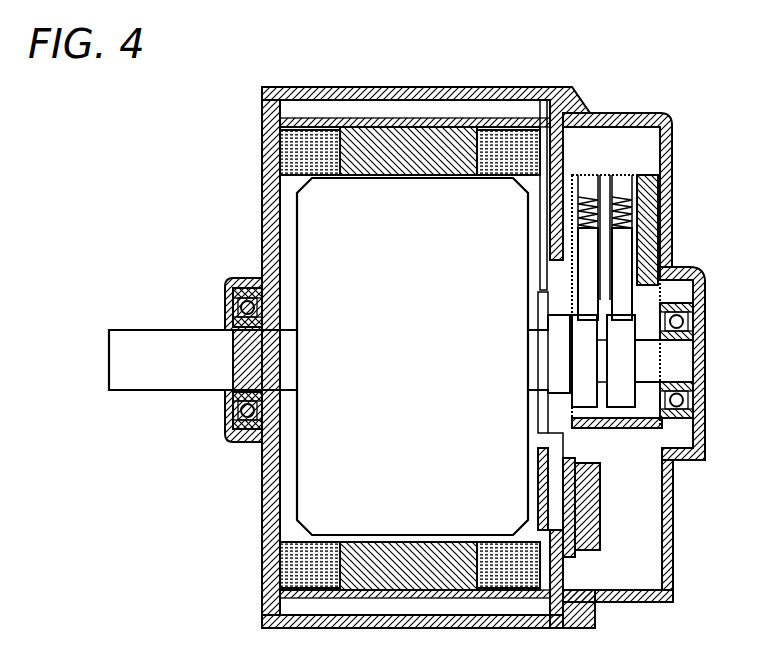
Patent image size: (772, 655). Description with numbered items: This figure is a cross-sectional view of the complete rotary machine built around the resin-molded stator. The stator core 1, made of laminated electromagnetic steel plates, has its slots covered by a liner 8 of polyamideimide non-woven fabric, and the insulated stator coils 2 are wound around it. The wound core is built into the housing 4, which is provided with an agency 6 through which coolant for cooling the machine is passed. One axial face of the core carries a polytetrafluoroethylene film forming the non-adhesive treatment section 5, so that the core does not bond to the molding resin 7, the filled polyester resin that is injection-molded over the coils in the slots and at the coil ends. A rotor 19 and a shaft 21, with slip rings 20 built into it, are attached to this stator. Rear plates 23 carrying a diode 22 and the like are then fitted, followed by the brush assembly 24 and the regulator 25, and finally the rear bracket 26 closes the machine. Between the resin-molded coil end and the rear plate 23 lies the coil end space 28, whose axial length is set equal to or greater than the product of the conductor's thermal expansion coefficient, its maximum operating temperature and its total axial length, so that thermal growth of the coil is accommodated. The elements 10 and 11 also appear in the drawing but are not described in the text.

The stator core 1 is at (362, 122).
The stator coil 2 is at (262, 146).
The housing 4 is at (413, 87).
The non-adhesive treatment section 5 is at (484, 138).
The agency 6 is at (386, 105).
The molding resin 7 is at (262, 188).
The liner 8 is at (462, 128).
The bracket 10 is at (268, 580).
The bearing 11 is at (228, 400).
The rotor 19 is at (330, 262).
The slip rings 20 is at (623, 337).
The shaft 21 is at (200, 345).
The diode 22 is at (600, 500).
The rear plate 23 is at (573, 128).
The brush assembly 24 is at (620, 246).
The regulator 25 is at (658, 190).
The rear bracket 26 is at (590, 115).
The coil end space 28 is at (545, 100).